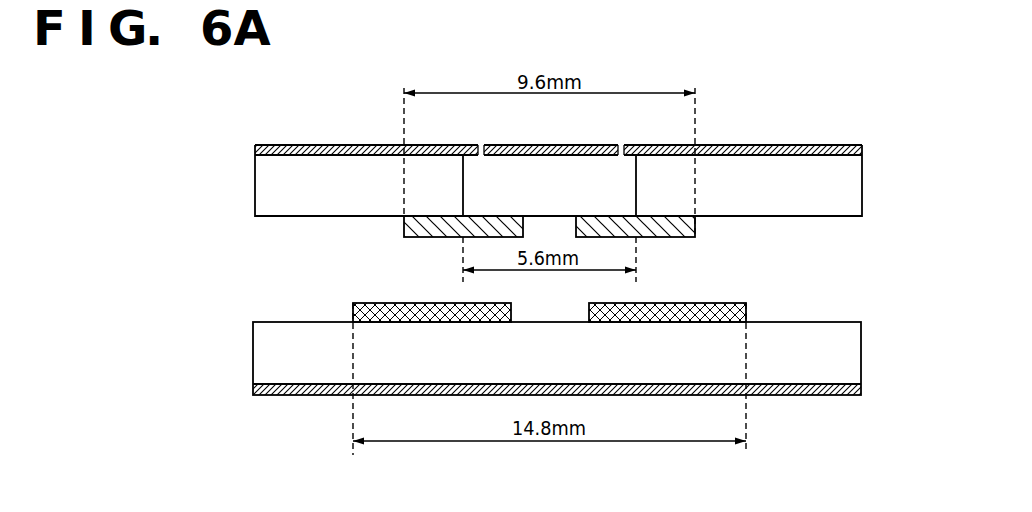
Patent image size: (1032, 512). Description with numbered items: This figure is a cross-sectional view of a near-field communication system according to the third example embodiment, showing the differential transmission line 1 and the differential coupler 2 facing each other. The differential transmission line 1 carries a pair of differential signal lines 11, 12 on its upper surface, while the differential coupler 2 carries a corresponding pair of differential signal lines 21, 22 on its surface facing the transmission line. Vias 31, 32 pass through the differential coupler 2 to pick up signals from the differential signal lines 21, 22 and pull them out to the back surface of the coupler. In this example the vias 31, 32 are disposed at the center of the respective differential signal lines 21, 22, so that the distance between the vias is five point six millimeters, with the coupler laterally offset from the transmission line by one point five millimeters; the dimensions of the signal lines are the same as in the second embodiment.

The differential transmission line 1 is at (860, 350).
The differential coupler 2 is at (848, 183).
The differential signal line 11 is at (353, 312).
The differential signal line 12 is at (746, 312).
The differential signal line 21 is at (404, 223).
The differential signal line 22 is at (688, 223).
The via 31 is at (463, 185).
The via 32 is at (636, 185).